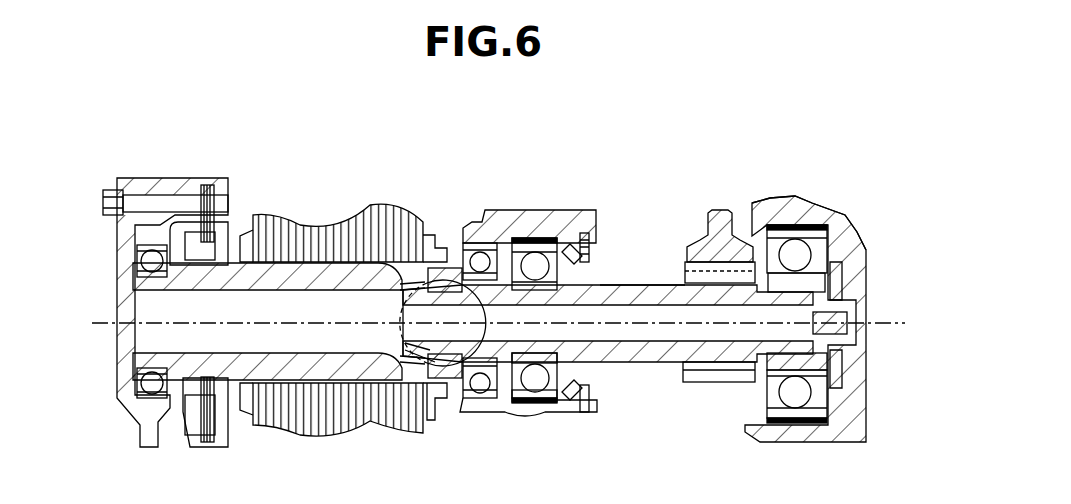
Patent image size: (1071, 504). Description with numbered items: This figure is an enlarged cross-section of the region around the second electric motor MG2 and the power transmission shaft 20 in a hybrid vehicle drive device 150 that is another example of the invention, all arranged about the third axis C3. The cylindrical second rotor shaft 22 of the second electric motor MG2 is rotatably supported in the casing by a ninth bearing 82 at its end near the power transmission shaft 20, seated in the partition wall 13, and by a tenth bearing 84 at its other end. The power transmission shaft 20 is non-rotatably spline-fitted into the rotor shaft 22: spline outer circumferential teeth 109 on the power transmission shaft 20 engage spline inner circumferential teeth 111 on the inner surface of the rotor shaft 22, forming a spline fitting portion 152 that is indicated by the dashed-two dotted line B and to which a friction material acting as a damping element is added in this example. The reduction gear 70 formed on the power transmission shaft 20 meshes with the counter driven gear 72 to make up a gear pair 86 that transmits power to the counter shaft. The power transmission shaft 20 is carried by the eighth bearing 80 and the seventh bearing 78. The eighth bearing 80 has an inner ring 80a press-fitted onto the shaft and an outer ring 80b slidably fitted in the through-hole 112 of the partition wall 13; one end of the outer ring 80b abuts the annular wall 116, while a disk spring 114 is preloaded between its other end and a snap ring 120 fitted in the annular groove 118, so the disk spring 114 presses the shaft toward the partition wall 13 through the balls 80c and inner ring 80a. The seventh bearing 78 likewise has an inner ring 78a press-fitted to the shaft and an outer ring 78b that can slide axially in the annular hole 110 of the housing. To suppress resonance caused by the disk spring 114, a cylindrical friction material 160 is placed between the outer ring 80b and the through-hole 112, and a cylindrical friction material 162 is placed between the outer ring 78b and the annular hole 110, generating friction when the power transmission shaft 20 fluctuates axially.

The second electric motor MG2 is at (327, 190).
The second rotor shaft 22 is at (226, 288).
The spline inner circumferential teeth 111 is at (388, 298).
The dashed-two dotted line B is at (385, 350).
The spline outer circumferential teeth 109 is at (416, 352).
The spline fitting portion 152 is at (440, 395).
The power transmission shaft 20 is at (624, 362).
The gear pair 86 is at (672, 250).
The annular wall 116 is at (482, 236).
The partition wall 13 is at (550, 225).
The friction material 160 is at (538, 238).
The through-hole 112 is at (527, 238).
The disk spring 114 is at (572, 250).
The annular groove 118 is at (584, 252).
The ninth bearing 82 is at (480, 387).
The eighth bearing 80 is at (533, 409).
The inner ring 80a is at (548, 358).
The outer ring 80b is at (518, 395).
The balls 80c is at (540, 385).
The snap ring 120 is at (595, 402).
The counter driven gear 72 is at (708, 268).
The reduction gear 70 is at (690, 380).
The hybrid vehicle drive device 150 is at (815, 168).
The annular hole 110 is at (795, 226).
The friction material 162 is at (818, 236).
The seventh bearing 78 is at (767, 419).
The inner ring 78a is at (778, 367).
The outer ring 78b is at (786, 413).
The tenth bearing 84 is at (148, 388).
The third axis C3 is at (898, 320).